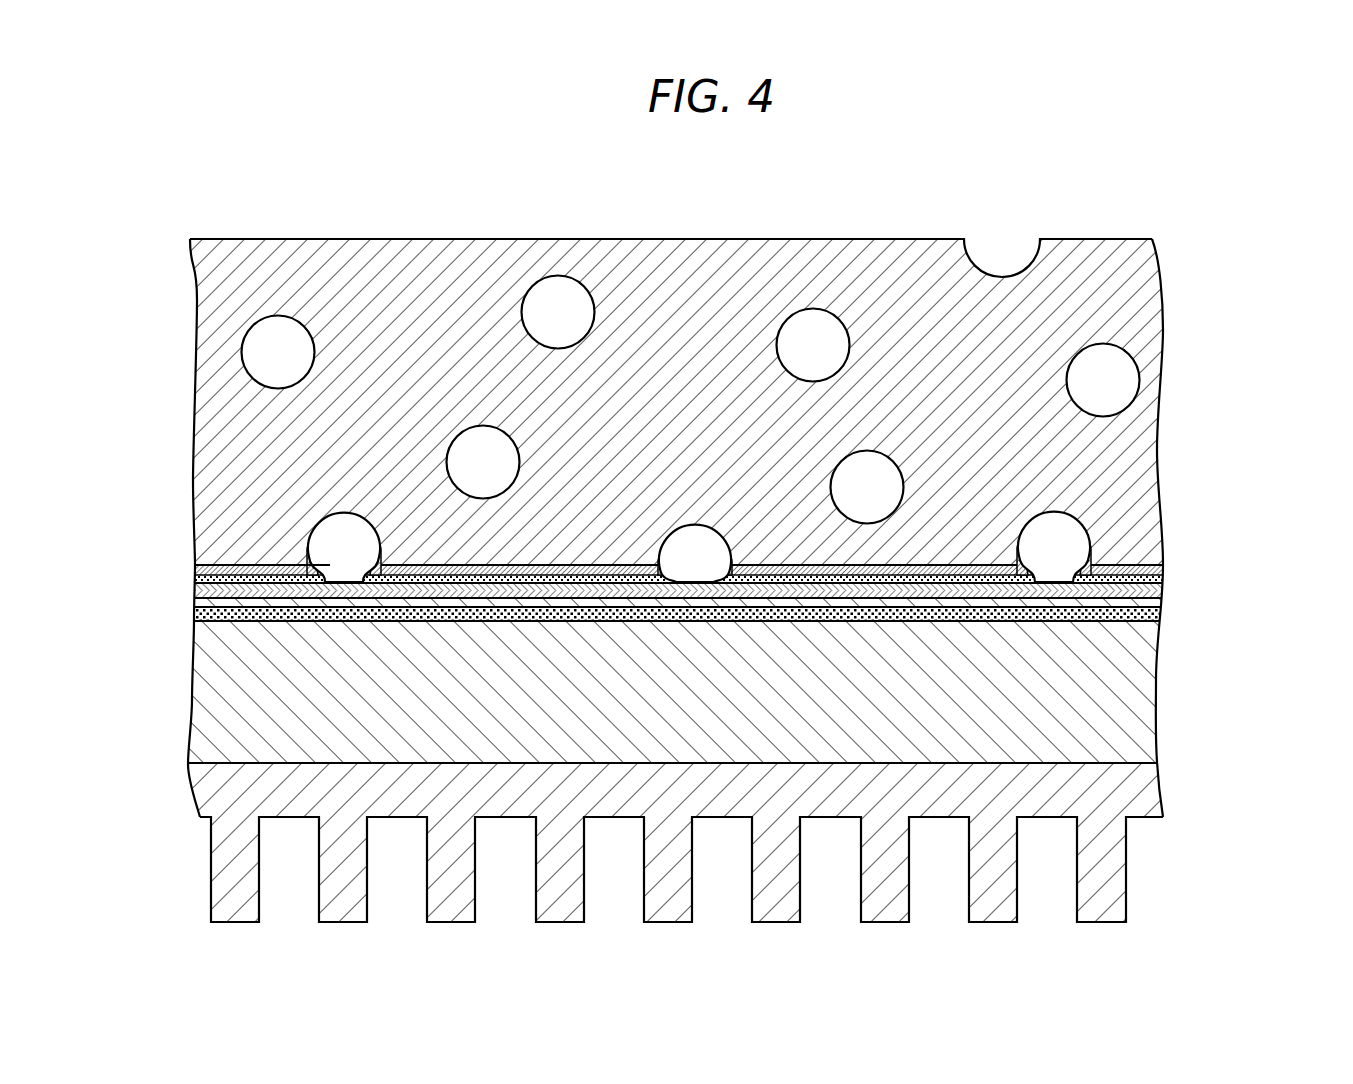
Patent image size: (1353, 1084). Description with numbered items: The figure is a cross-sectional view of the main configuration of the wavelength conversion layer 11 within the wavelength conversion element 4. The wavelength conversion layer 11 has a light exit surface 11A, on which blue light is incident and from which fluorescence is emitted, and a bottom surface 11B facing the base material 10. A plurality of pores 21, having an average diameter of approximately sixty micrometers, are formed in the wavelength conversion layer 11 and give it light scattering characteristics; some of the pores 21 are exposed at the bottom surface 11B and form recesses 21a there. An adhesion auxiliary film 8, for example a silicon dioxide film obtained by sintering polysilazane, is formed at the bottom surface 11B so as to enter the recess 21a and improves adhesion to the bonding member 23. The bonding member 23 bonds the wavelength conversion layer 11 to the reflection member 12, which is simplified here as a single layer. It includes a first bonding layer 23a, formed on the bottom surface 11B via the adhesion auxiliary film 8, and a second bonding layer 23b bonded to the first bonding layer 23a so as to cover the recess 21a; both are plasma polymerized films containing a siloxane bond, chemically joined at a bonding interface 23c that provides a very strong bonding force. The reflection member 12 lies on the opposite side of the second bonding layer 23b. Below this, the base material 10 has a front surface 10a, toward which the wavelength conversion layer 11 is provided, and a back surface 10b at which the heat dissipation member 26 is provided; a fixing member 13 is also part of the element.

The wavelength conversion element 4 is at (1172, 206).
The adhesion auxiliary film 8 is at (1163, 565).
The base material 10 is at (1143, 678).
The front surface 10a is at (197, 614).
The back surface 10b is at (210, 765).
The wavelength conversion layer 11 is at (1140, 299).
The light exit surface 11A is at (1104, 238).
The bottom surface 11B is at (197, 574).
The reflection member 12 is at (1163, 600).
The fixing member 13 is at (1163, 615).
The pores 21 is at (290, 383).
The recesses 21a is at (715, 533).
The bonding member 23 is at (1257, 525).
The first bonding layer 23a is at (1163, 572).
The second bonding layer 23b is at (1163, 589).
The bonding interface 23c is at (1163, 580).
The heat dissipation member 26 is at (1110, 852).